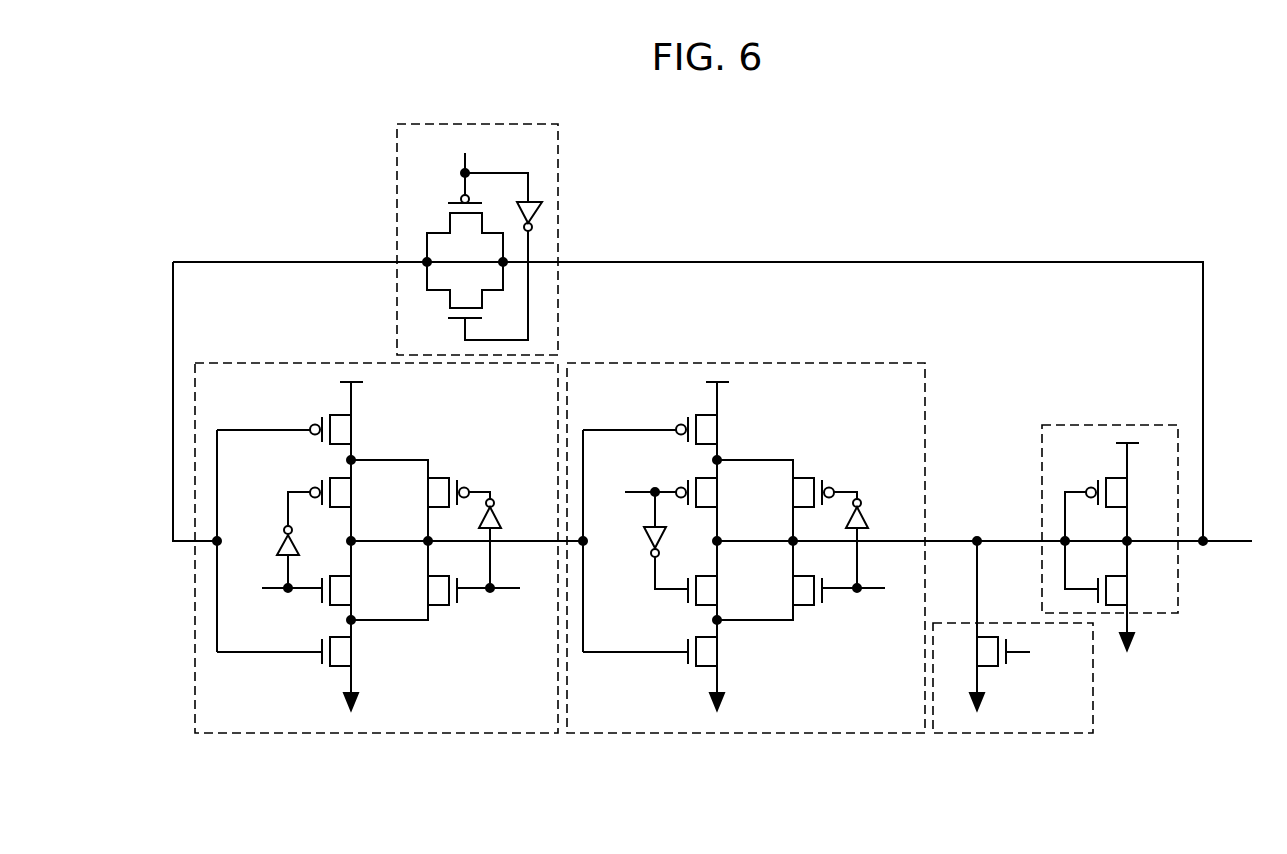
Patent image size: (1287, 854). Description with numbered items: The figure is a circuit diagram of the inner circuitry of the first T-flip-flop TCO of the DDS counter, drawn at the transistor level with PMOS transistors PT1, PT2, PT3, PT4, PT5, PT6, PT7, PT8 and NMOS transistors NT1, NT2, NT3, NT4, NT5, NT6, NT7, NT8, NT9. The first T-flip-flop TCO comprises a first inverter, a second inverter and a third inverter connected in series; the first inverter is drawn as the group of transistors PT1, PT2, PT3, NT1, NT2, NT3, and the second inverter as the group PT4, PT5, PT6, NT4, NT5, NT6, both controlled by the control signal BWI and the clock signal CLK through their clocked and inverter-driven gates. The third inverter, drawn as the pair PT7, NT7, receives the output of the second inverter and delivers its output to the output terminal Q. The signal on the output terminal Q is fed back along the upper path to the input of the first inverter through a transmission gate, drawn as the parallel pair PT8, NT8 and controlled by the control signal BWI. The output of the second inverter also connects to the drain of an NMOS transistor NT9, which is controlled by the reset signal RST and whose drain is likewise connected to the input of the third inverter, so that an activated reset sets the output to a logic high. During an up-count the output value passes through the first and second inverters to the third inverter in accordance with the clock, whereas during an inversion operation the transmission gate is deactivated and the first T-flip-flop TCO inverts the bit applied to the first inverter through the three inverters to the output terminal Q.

The first T-flip-flop TCO is at (1128, 173).
The first PMOS transistor PT1 is at (347, 429).
The second PMOS transistor PT2 is at (347, 492).
The third PMOS transistor PT3 is at (431, 492).
The fourth PMOS transistor PT4 is at (713, 429).
The fifth PMOS transistor PT5 is at (713, 492).
The sixth PMOS transistor PT6 is at (796, 492).
The seventh PMOS transistor PT7 is at (1123, 492).
The eighth PMOS transistor (transmission gate) PT8 is at (465, 260).
The first NMOS transistor NT1 is at (355, 651).
The second NMOS transistor NT2 is at (355, 590).
The third NMOS transistor NT3 is at (424, 590).
The fourth NMOS transistor NT4 is at (721, 651).
The fifth NMOS transistor NT5 is at (721, 590).
The sixth NMOS transistor NT6 is at (789, 590).
The seventh NMOS transistor NT7 is at (1131, 590).
The eighth NMOS transistor (transmission gate) NT8 is at (465, 274).
The ninth NMOS transistor (reset) NT9 is at (972, 651).